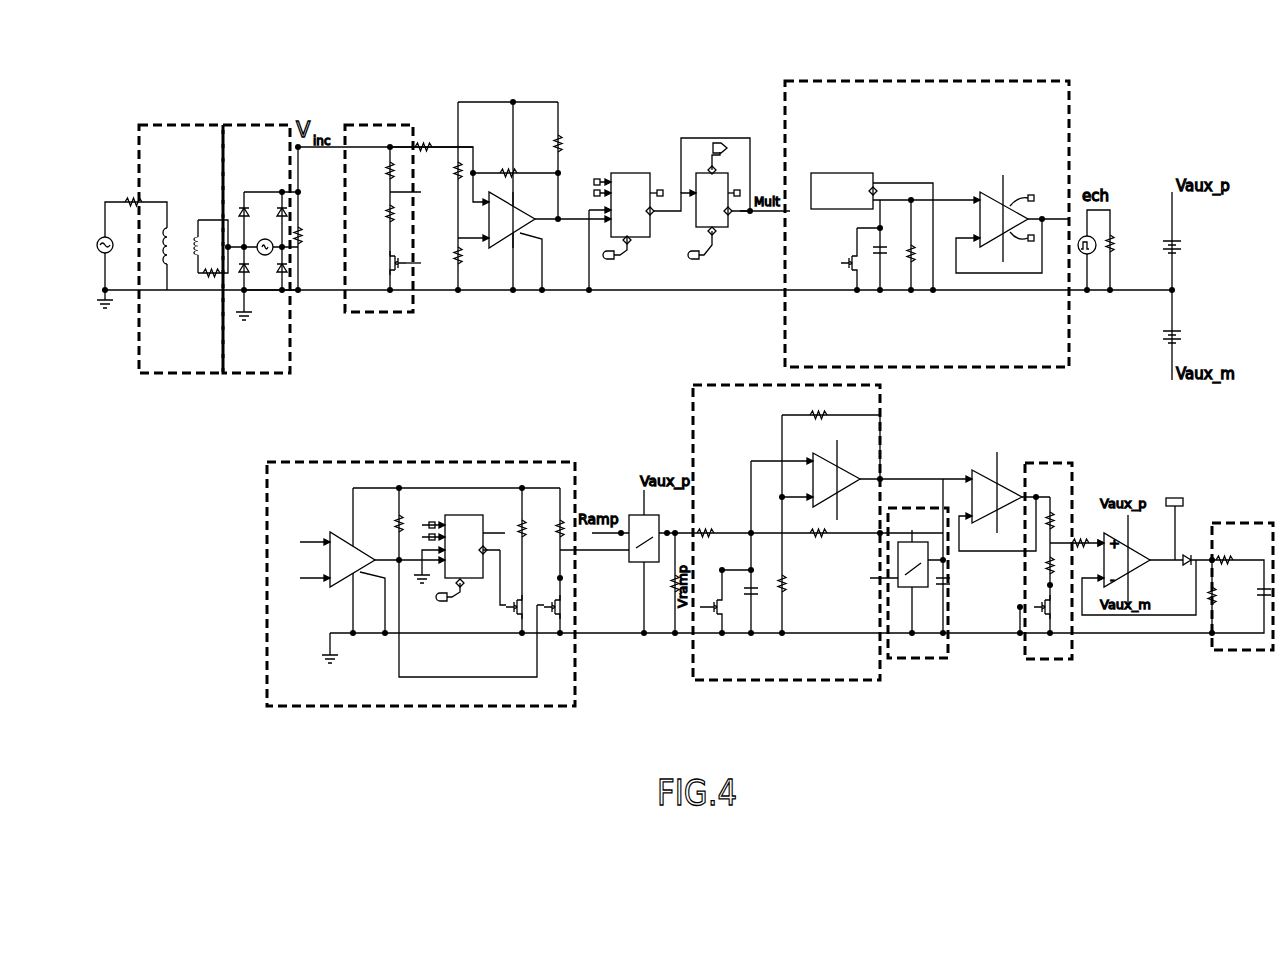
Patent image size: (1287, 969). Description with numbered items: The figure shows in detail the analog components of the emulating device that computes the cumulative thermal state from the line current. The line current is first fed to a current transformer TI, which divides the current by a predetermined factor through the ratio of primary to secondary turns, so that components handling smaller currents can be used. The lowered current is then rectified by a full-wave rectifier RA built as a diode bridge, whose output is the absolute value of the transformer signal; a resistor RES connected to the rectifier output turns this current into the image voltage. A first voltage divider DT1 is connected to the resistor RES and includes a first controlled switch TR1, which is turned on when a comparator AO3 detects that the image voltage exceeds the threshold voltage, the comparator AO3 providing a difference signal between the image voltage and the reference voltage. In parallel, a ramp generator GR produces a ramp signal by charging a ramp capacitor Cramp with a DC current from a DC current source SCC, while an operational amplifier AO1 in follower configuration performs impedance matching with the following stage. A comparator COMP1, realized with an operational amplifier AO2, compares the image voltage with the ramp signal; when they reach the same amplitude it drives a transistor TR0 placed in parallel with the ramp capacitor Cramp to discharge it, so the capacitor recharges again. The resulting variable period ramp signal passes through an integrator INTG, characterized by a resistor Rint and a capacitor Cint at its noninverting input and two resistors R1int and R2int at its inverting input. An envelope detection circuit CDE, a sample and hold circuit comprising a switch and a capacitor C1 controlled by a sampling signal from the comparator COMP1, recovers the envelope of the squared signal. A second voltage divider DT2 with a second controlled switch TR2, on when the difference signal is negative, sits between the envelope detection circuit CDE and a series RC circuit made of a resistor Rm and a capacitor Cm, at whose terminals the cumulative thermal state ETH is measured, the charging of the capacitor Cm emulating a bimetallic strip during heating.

The current transformer TI is at (170, 125).
The full-wave rectifier RA is at (250, 125).
The resistor RES is at (317, 218).
The first voltage divider DT1 is at (393, 180).
The first controlled switch TR1 is at (386, 264).
The comparator AO3 is at (500, 187).
The ramp generator GR is at (930, 189).
The DC current source SCC is at (836, 173).
The ramp capacitor Cramp is at (876, 258).
The transistor TR0 is at (839, 260).
The operational amplifier AO1 is at (1015, 218).
The comparator COMP1 is at (379, 584).
The operational amplifier AO2 is at (339, 574).
The integrator INTG is at (826, 552).
The resistor Rint is at (713, 520).
The capacitor Cint is at (742, 598).
The resistor R1int is at (805, 584).
The resistor R2int is at (824, 402).
The envelope detection circuit CDE is at (944, 580).
The capacitor C1 is at (957, 598).
The second voltage divider DT2 is at (1044, 592).
The second controlled switch TR2 is at (1018, 609).
The resistor Rm is at (1225, 596).
The output resistor ETH is at (1238, 586).
The capacitor Cm is at (1249, 604).